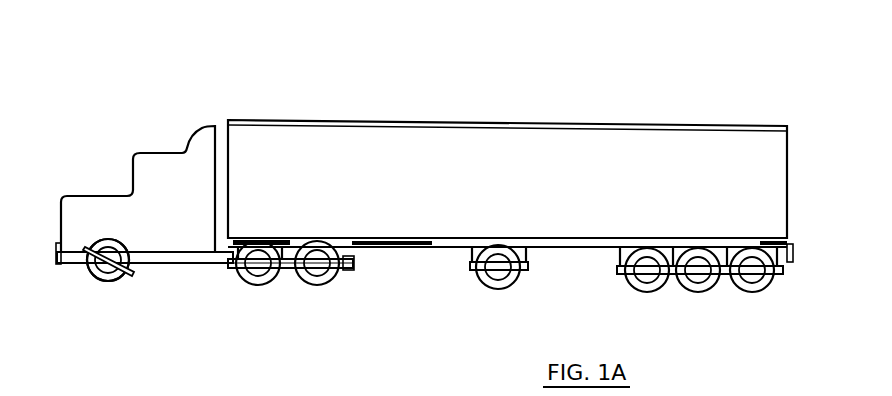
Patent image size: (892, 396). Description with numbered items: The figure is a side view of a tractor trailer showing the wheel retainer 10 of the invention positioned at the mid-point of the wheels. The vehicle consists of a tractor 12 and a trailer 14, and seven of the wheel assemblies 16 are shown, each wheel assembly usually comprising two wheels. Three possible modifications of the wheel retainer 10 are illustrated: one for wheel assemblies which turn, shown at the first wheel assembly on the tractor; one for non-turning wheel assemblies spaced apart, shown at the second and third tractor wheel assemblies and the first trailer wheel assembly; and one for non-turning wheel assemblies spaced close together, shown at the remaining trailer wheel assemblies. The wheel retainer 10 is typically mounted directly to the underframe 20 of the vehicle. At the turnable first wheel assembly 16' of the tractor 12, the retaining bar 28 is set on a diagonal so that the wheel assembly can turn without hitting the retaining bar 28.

The tractor 12 is at (119, 146).
The trailer 14 is at (639, 111).
The underframe 20 is at (168, 260).
The retaining bar 28 is at (110, 255).
The wheel retainer 10 is at (139, 286).
The wheel assembly 16 is at (441, 289).
The turnable wheel assembly 16' is at (91, 289).